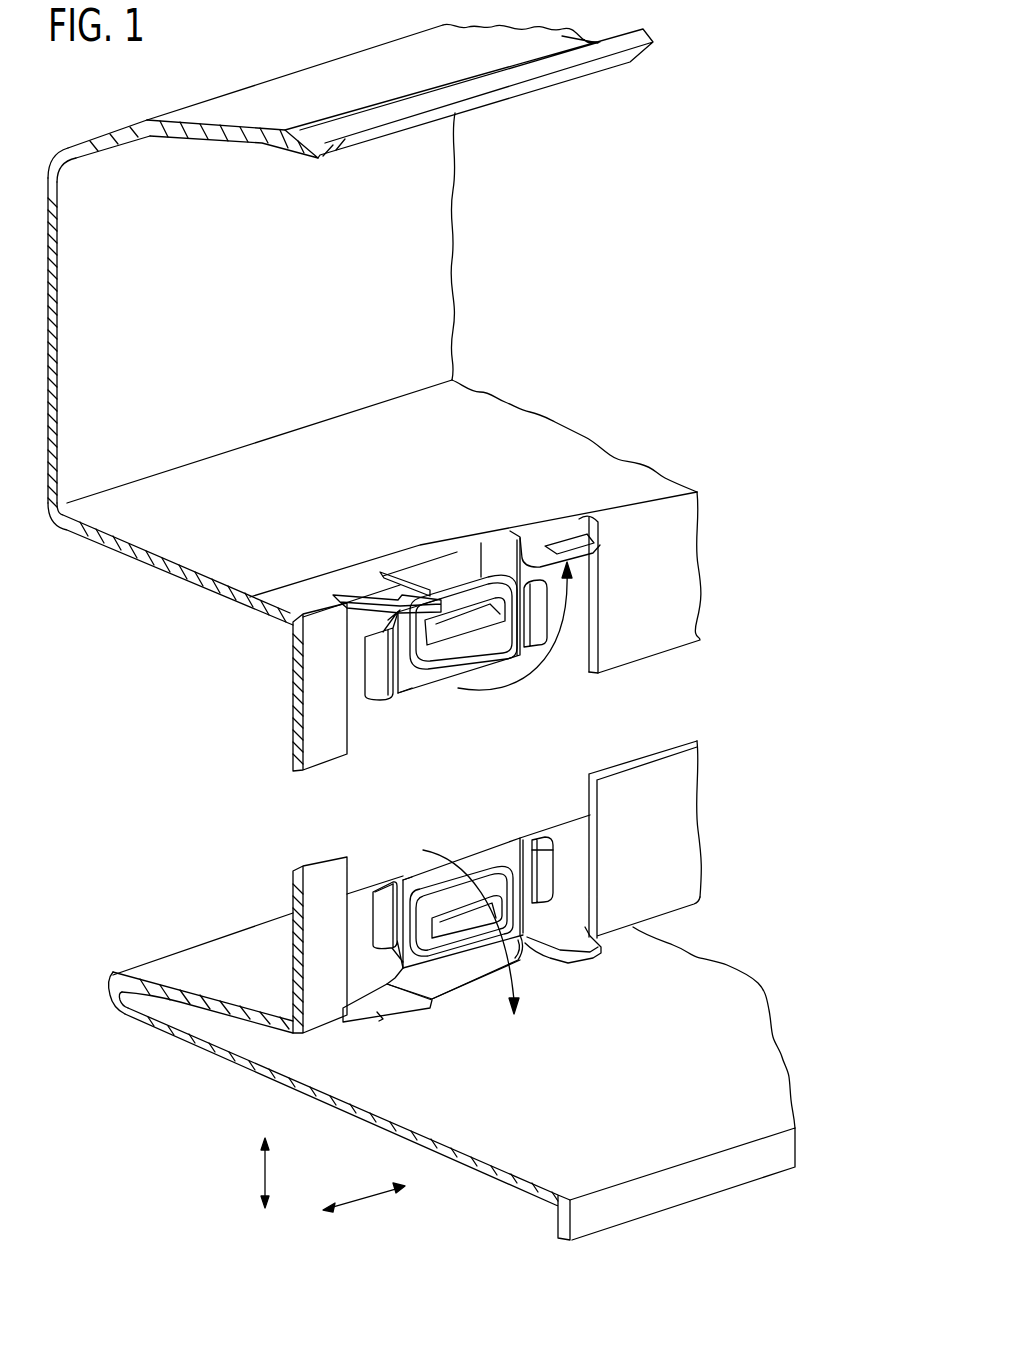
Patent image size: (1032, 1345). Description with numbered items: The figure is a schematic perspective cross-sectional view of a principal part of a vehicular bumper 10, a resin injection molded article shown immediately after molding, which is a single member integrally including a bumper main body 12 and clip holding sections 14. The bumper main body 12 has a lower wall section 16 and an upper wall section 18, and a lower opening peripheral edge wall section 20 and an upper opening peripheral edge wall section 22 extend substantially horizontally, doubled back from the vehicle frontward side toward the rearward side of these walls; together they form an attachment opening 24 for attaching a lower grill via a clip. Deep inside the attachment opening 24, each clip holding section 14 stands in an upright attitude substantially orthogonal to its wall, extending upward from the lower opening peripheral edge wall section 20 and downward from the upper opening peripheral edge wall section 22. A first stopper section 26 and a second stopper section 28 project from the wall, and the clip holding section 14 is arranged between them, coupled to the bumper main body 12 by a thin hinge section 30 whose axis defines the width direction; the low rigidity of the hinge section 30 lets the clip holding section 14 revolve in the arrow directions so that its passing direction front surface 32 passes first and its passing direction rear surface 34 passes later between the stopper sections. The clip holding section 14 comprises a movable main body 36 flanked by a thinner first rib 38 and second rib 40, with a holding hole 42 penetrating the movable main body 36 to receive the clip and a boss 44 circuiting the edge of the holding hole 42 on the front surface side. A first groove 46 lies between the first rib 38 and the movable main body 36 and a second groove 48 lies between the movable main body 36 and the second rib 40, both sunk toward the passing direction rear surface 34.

The vehicular bumper 10 is at (712, 45).
The bumper main body 12 is at (432, 238).
The clip holding section 14 is at (382, 703).
The lower wall section 16 is at (729, 978).
The upper wall section 18 is at (298, 88).
The lower opening peripheral edge wall section 20 is at (218, 950).
The upper opening peripheral edge wall section 22 is at (524, 428).
The attachment opening 24 is at (177, 617).
The first stopper section 26 is at (428, 592).
The second stopper section 28 is at (570, 545).
The hinge section 30 is at (455, 553).
The passing direction front surface 32 is at (447, 670).
The passing direction rear surface 34 is at (420, 694).
The movable main body 36 is at (497, 555).
The first rib 38 is at (385, 900).
The second rib 40 is at (553, 880).
The holding hole 42 is at (460, 633).
The boss 44 is at (479, 592).
The first groove 46 is at (390, 657).
The second groove 48 is at (528, 610).